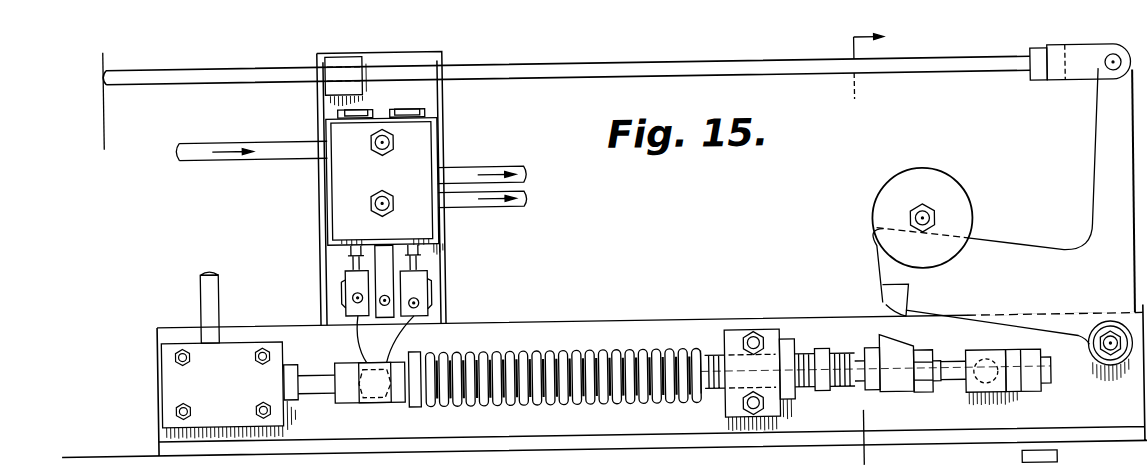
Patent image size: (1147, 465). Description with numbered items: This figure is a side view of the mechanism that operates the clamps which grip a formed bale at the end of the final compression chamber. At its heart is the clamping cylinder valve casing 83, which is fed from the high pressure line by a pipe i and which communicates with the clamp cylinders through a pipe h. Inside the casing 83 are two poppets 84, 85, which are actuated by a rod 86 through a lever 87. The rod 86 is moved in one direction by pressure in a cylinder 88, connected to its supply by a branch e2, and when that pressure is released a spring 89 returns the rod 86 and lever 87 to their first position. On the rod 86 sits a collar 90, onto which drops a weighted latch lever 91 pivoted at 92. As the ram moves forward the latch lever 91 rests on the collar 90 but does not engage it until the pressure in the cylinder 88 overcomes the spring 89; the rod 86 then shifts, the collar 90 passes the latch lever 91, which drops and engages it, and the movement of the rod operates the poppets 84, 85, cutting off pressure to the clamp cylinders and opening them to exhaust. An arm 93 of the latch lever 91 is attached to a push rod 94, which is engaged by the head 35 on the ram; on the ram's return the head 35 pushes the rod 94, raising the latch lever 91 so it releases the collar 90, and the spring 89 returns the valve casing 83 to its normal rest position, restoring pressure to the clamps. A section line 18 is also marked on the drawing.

The section line 18 is at (885, 249).
The head 35 is at (107, 110).
The clamping cylinder valve casing 83 is at (384, 182).
The poppet 84 is at (346, 260).
The poppet 85 is at (419, 261).
The rod 86 is at (404, 399).
The lever 87 is at (376, 340).
The cylinder 88 is at (228, 390).
The spring 89 is at (571, 356).
The collar 90 is at (893, 394).
The weighted latch lever 91 is at (1033, 255).
The pivot 92 is at (1110, 359).
The arm 93 is at (1100, 163).
The push rod 94 is at (577, 76).
The pipe i is at (292, 147).
The pipe h is at (474, 208).
The branch e2 is at (219, 300).